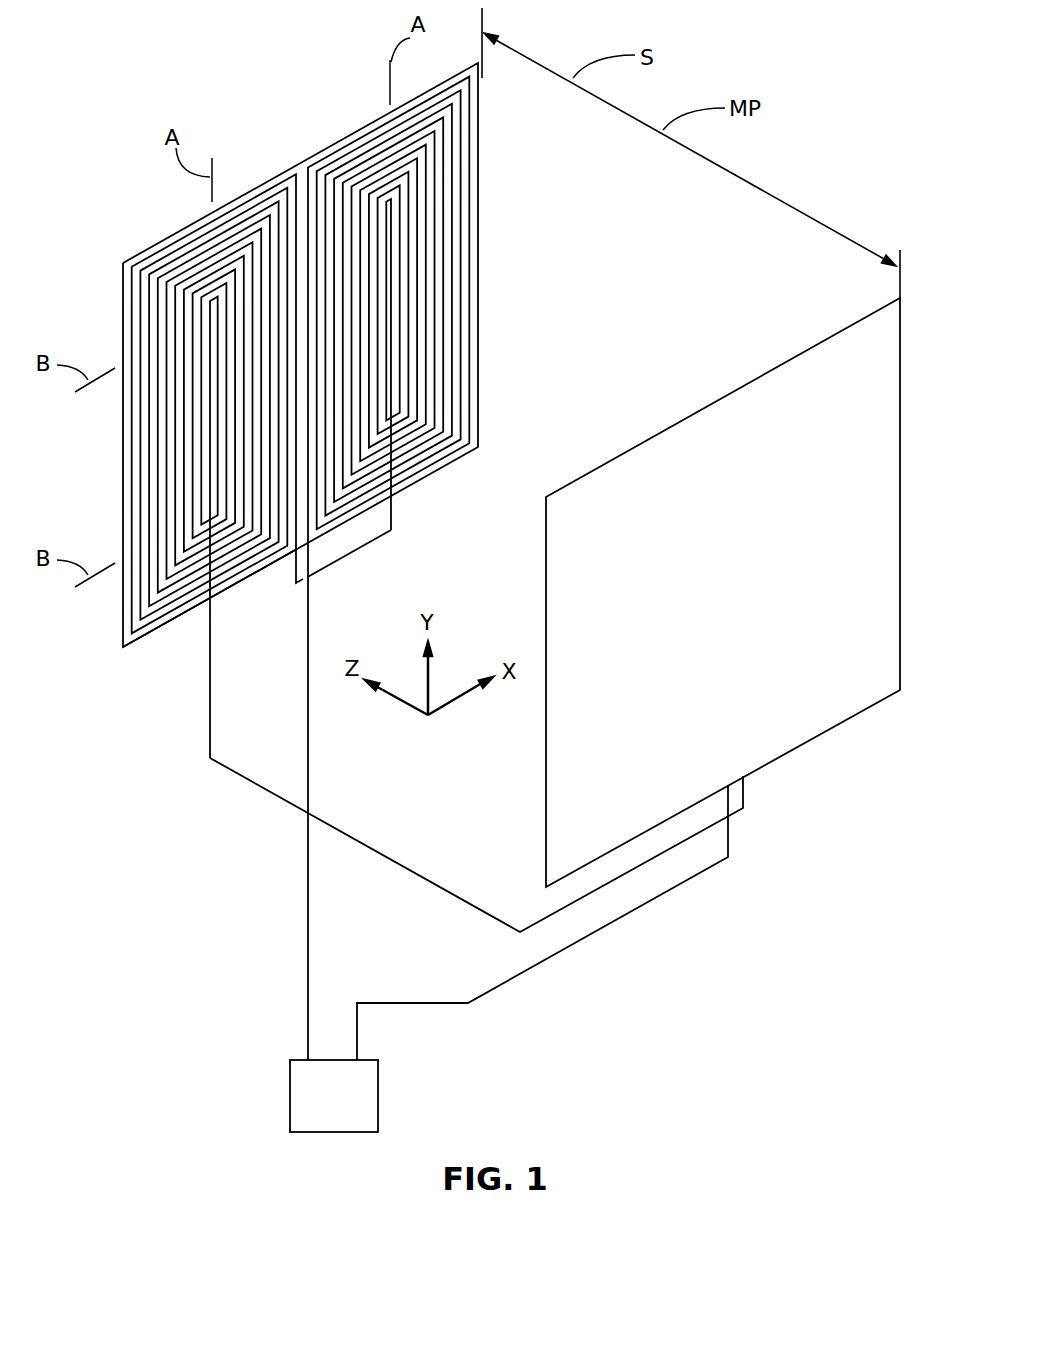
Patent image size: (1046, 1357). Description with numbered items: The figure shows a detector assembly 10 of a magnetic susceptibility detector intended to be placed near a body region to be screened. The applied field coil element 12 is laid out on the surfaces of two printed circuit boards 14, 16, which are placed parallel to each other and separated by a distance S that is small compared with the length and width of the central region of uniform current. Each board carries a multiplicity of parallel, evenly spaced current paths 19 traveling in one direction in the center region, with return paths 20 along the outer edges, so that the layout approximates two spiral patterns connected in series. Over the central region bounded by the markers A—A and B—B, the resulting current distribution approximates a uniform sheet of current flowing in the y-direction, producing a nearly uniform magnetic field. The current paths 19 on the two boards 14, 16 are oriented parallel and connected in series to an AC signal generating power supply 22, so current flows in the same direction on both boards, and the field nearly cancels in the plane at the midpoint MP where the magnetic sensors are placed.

The detector assembly 10 is at (793, 163).
The applied field coil element 12 is at (299, 410).
The printed circuit board 14 is at (479, 141).
The printed circuit board 16 is at (800, 354).
The current paths 19 is at (267, 248).
The return paths 20 is at (455, 263).
The AC signal generating power supply 22 is at (380, 1098).